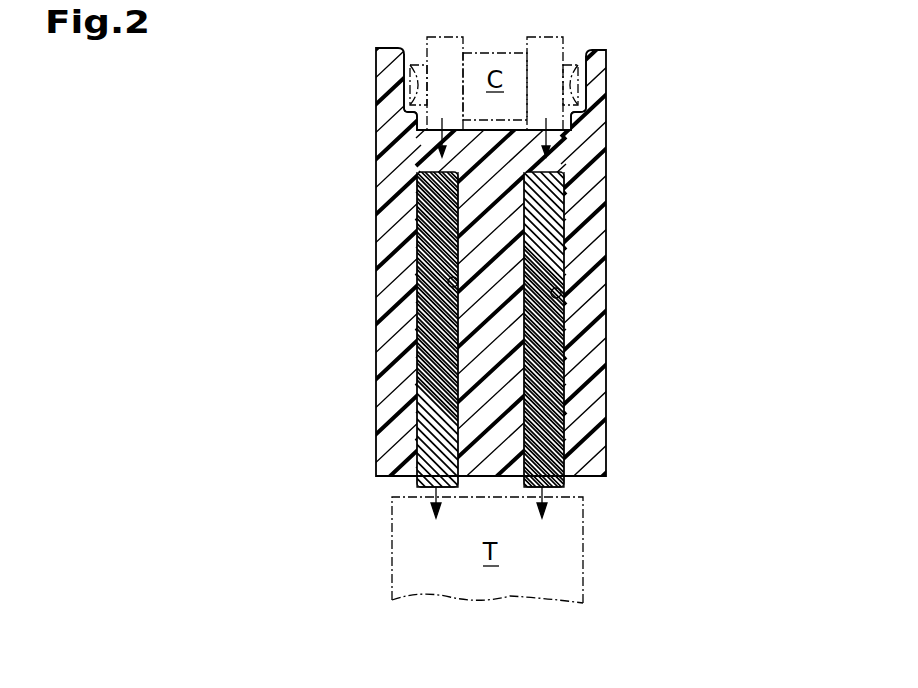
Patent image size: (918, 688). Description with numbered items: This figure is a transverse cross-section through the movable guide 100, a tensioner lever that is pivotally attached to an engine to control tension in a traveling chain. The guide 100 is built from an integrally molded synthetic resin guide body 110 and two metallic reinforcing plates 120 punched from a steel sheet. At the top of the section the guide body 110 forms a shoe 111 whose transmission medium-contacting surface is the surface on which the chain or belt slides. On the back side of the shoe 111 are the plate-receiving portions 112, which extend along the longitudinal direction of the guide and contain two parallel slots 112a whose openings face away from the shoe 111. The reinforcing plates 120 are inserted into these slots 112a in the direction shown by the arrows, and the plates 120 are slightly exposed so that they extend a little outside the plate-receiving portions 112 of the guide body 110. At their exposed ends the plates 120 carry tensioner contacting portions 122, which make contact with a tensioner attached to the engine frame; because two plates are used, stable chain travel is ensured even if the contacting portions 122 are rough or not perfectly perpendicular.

The movable guide 100 is at (487, 289).
The guide body 110 is at (583, 289).
The shoe 111 is at (503, 126).
The plate-receiving portions 112 is at (590, 211).
The slots 112a is at (457, 281).
The reinforcing plates 120 is at (430, 333).
The tensioner contacting portions 122 is at (424, 488).